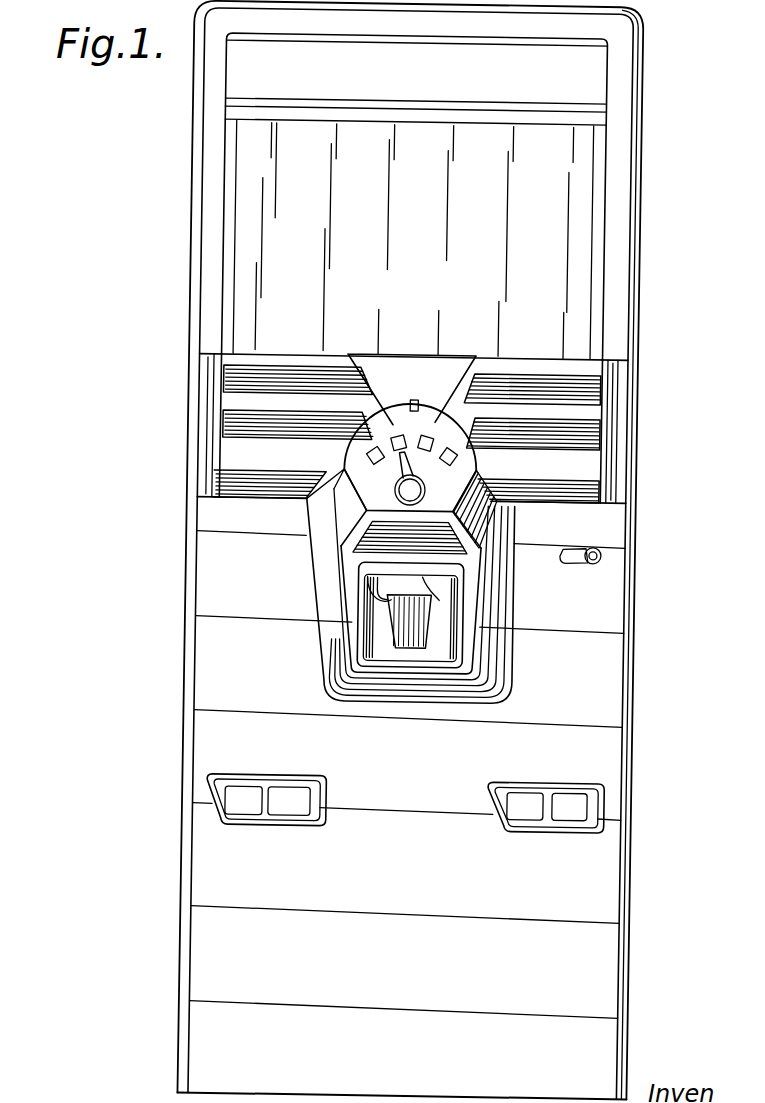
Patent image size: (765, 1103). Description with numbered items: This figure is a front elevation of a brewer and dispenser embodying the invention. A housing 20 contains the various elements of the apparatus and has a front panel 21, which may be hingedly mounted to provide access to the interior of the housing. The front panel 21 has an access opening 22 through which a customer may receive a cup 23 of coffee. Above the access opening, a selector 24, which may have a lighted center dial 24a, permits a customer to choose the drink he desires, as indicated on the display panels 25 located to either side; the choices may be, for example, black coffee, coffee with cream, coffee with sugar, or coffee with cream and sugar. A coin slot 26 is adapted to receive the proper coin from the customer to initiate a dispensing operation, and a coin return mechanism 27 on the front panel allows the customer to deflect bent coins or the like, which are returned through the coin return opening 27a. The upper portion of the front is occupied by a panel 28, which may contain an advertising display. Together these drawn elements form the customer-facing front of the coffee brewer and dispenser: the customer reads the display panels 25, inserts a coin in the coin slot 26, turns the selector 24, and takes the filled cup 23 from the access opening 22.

The housing 20 is at (652, 144).
The front panel 21 is at (392, 918).
The access opening 22 is at (362, 628).
The cup 23 is at (428, 634).
The selector 24 is at (401, 468).
The lighted center dial 24a is at (424, 490).
The display panels 25 is at (242, 423).
The coin slot 26 is at (414, 400).
The coin return mechanism 27 is at (582, 548).
The coin return opening 27a is at (572, 822).
The panel 28 is at (556, 228).